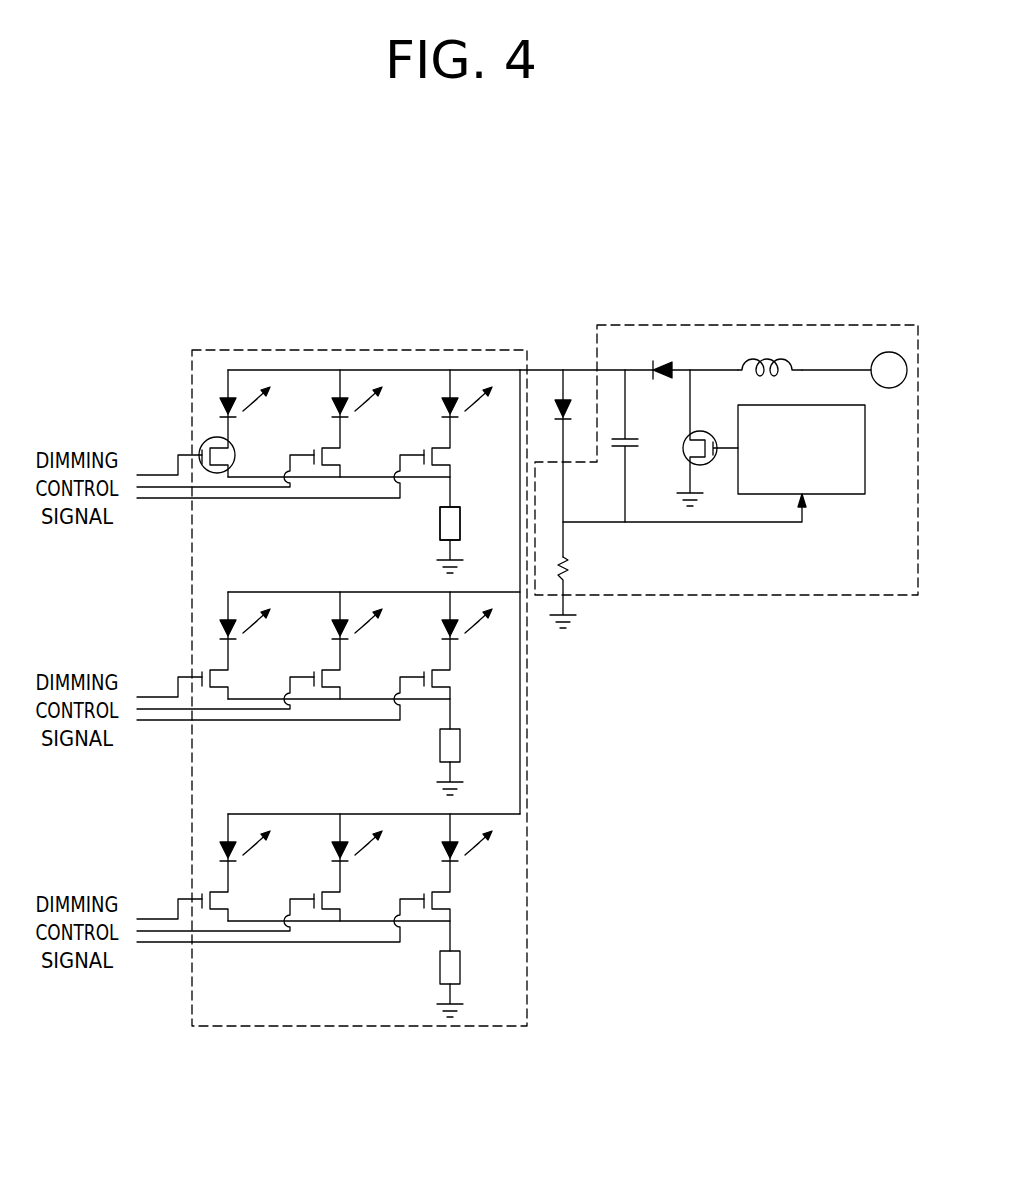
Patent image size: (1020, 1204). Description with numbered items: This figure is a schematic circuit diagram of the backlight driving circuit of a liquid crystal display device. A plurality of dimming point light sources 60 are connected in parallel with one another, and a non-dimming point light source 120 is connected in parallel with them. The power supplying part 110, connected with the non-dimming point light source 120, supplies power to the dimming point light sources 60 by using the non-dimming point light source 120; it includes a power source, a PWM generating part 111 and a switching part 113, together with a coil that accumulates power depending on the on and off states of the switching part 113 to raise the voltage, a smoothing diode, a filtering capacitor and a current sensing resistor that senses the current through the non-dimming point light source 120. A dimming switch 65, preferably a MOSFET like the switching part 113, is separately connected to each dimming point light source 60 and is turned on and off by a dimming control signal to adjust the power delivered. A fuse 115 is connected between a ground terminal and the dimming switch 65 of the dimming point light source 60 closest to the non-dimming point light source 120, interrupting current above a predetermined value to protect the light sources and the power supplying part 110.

The dimming point light source 60 is at (332, 652).
The dimming switch 65 is at (204, 442).
The power supplying part 110 is at (726, 439).
The PWM generating part 111 is at (849, 495).
The switching part 113 is at (713, 470).
The fuse 115 is at (440, 535).
The non-dimming point light source 120 is at (553, 398).